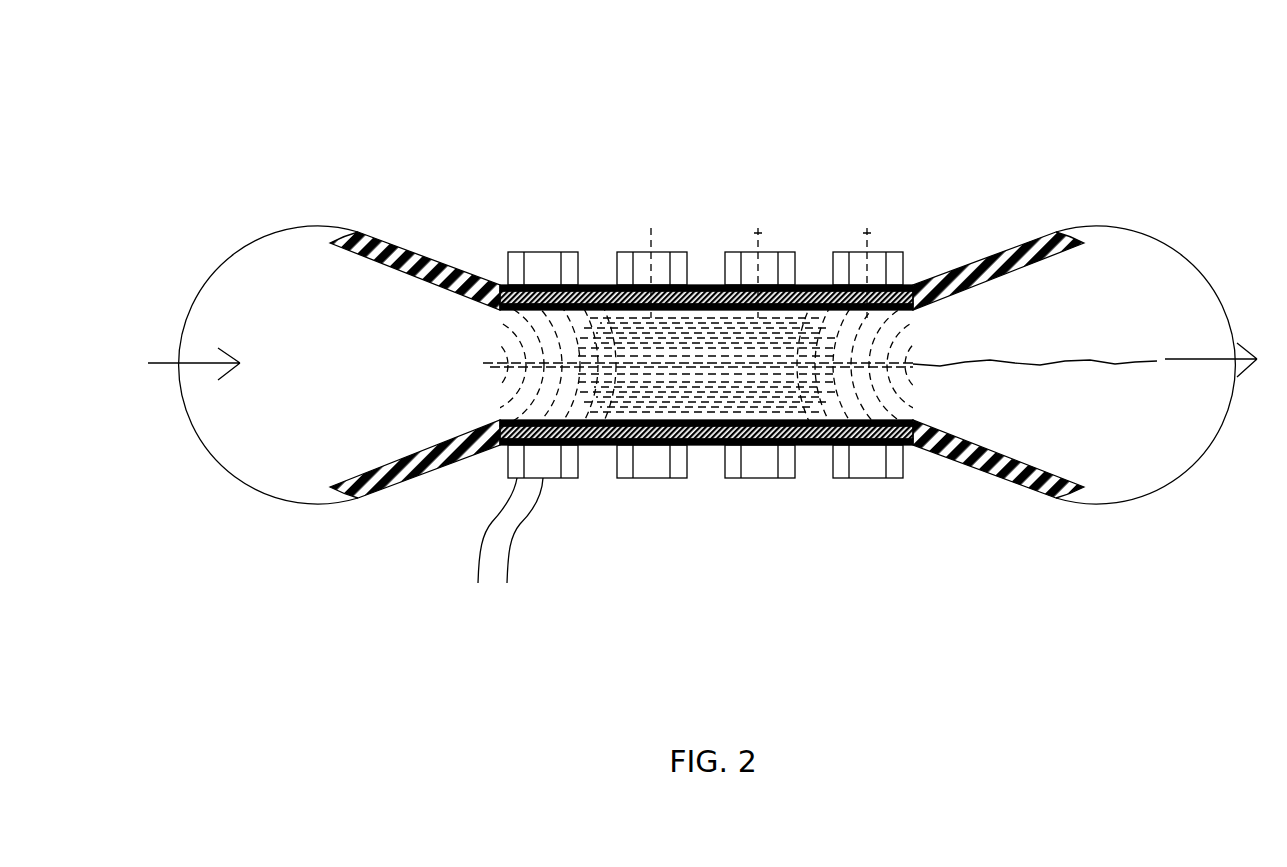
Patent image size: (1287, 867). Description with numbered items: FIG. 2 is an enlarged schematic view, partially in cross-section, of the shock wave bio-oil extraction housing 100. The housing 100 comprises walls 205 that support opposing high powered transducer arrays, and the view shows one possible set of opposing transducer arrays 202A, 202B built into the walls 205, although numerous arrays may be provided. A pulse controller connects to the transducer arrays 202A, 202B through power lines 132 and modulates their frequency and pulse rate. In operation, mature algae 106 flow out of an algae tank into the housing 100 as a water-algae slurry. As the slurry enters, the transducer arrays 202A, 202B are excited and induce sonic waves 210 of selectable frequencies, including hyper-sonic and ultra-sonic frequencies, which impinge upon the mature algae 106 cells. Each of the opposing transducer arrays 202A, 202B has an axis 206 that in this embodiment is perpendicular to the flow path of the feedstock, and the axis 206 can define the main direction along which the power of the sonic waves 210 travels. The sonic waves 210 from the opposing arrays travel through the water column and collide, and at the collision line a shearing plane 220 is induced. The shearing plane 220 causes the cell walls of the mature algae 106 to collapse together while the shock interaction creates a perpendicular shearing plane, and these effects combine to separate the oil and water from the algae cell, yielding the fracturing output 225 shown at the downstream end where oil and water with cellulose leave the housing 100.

The shock wave bio-oil extraction housing 100 is at (437, 136).
The mature algae 106 is at (342, 383).
The power lines 132 is at (505, 560).
The opposing transducer array 202A is at (903, 250).
The opposing transducer array 202B is at (903, 480).
The walls 205 is at (428, 258).
The axis 206 is at (760, 233).
The sonic waves 210 is at (505, 330).
The shearing plane 220 is at (493, 367).
The fracturing outlet chamber 225 is at (1145, 305).